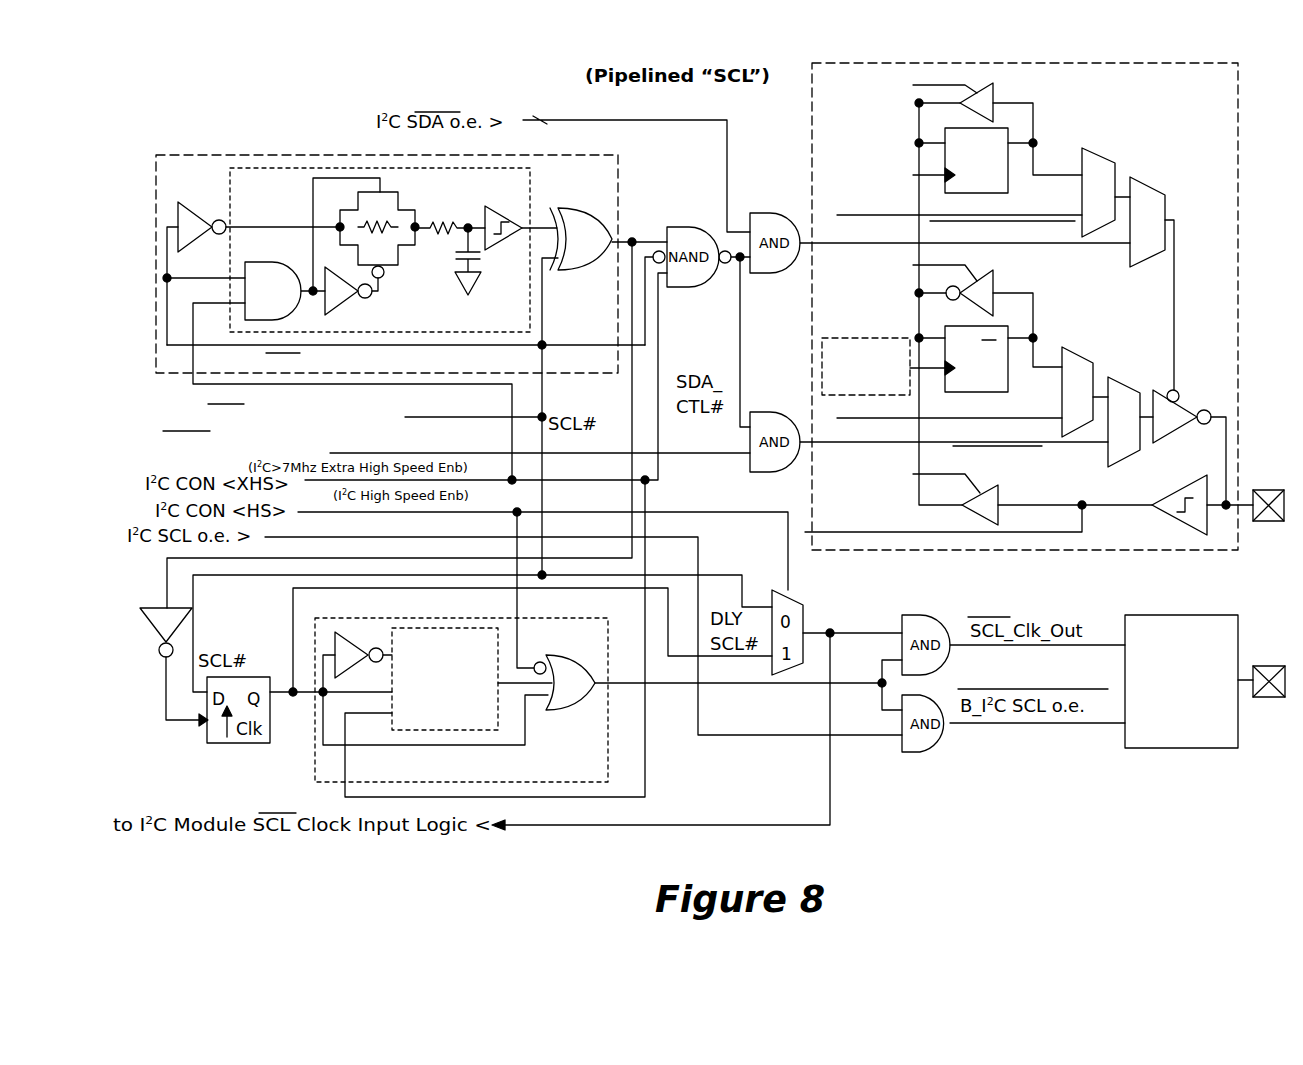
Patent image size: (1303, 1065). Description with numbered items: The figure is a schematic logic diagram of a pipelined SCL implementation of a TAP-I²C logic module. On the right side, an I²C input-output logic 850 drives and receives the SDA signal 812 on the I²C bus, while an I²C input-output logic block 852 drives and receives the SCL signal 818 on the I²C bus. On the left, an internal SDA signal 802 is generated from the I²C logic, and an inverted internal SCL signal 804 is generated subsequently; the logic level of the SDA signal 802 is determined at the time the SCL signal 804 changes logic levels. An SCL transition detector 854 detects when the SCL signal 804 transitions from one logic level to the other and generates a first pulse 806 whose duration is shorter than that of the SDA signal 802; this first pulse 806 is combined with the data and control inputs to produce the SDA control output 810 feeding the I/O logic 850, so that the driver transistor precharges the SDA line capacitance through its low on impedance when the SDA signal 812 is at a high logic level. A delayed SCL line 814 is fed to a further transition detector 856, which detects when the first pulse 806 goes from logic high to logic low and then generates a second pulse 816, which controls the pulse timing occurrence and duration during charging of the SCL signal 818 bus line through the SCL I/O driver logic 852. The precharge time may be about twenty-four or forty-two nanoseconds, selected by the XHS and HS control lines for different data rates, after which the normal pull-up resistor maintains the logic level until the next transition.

The internal SDA signal 802 is at (476, 453).
The internal SCL signal 804 is at (488, 417).
The first pulse 806 is at (632, 238).
The NAND output SDA_CTL# line 810 is at (740, 292).
The SDA signal 812 is at (1270, 522).
The DLY_SCL# flip-flop output line 814 is at (292, 617).
The second pulse 816 is at (672, 687).
The SCL signal 818 is at (1270, 697).
The I²C input-output logic 850 is at (985, 552).
The I²C input-output logic block 852 is at (1160, 748).
The SCL transition detector 854 is at (618, 174).
The transition detector 856 is at (315, 772).